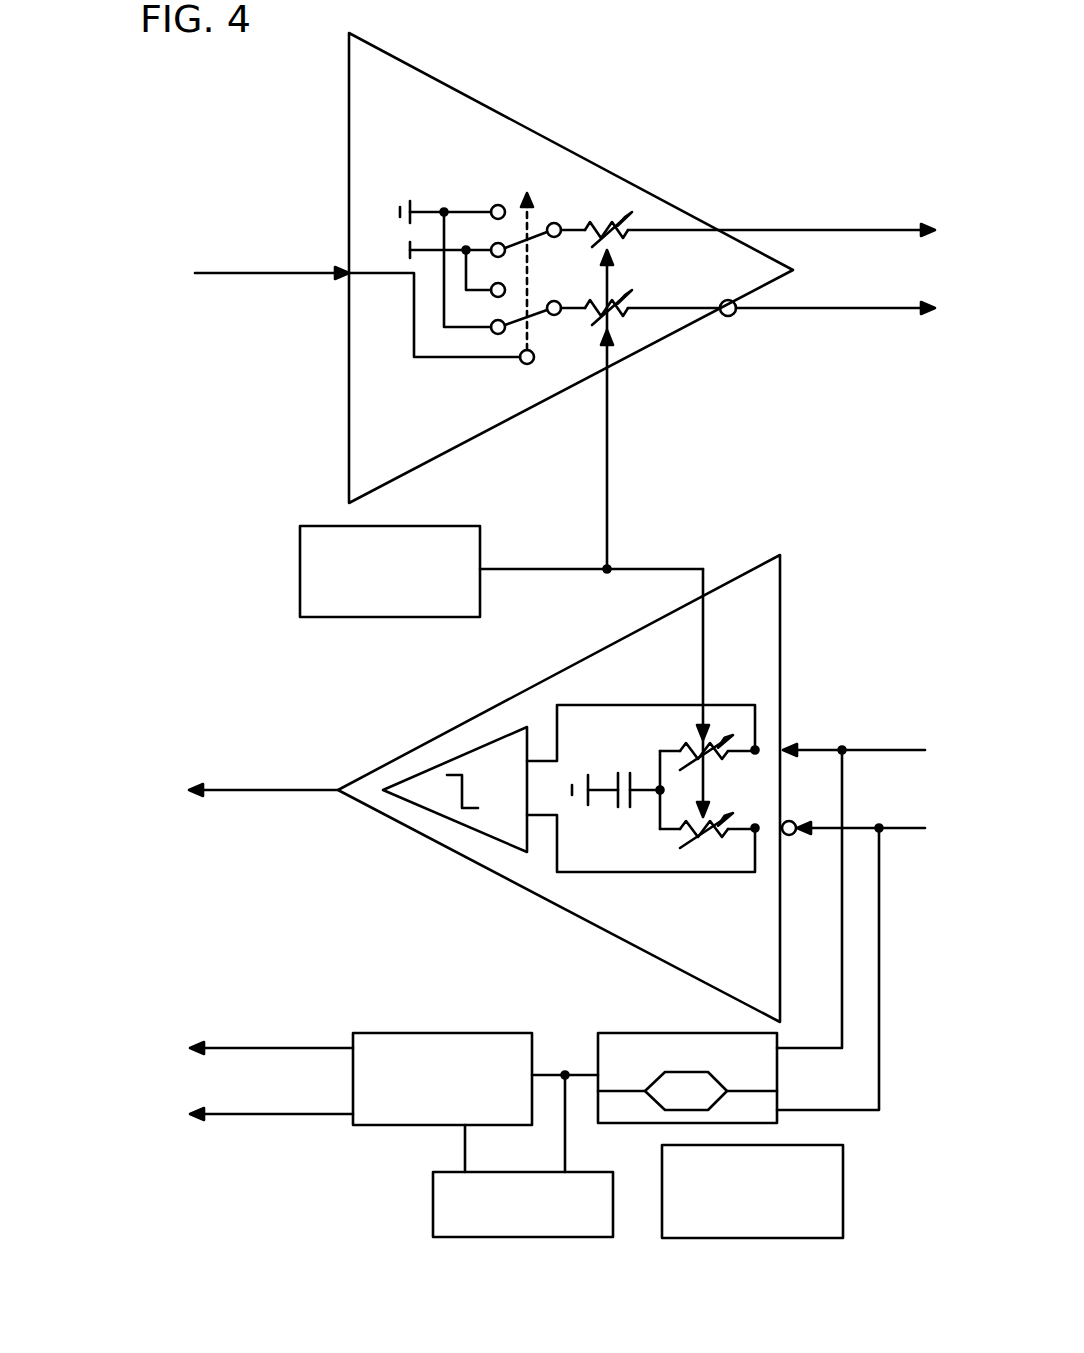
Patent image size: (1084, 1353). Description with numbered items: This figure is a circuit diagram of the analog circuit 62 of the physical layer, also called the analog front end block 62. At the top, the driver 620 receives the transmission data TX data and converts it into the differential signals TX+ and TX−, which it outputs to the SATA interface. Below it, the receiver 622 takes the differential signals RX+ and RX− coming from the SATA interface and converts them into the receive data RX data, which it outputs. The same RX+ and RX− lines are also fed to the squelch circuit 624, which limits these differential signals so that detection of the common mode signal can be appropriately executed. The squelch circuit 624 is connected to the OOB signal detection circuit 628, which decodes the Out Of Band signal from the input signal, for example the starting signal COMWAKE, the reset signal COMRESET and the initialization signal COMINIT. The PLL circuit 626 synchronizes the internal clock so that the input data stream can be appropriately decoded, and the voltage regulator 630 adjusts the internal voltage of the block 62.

The analog circuit 62 is at (707, 93).
The driver 620 is at (433, 93).
The receiver 622 is at (760, 637).
The squelch circuit 624 is at (606, 1043).
The PLL circuit 626 is at (493, 1228).
The OOB signal detection circuit 628 is at (400, 1042).
The voltage regulator 630 is at (722, 1222).